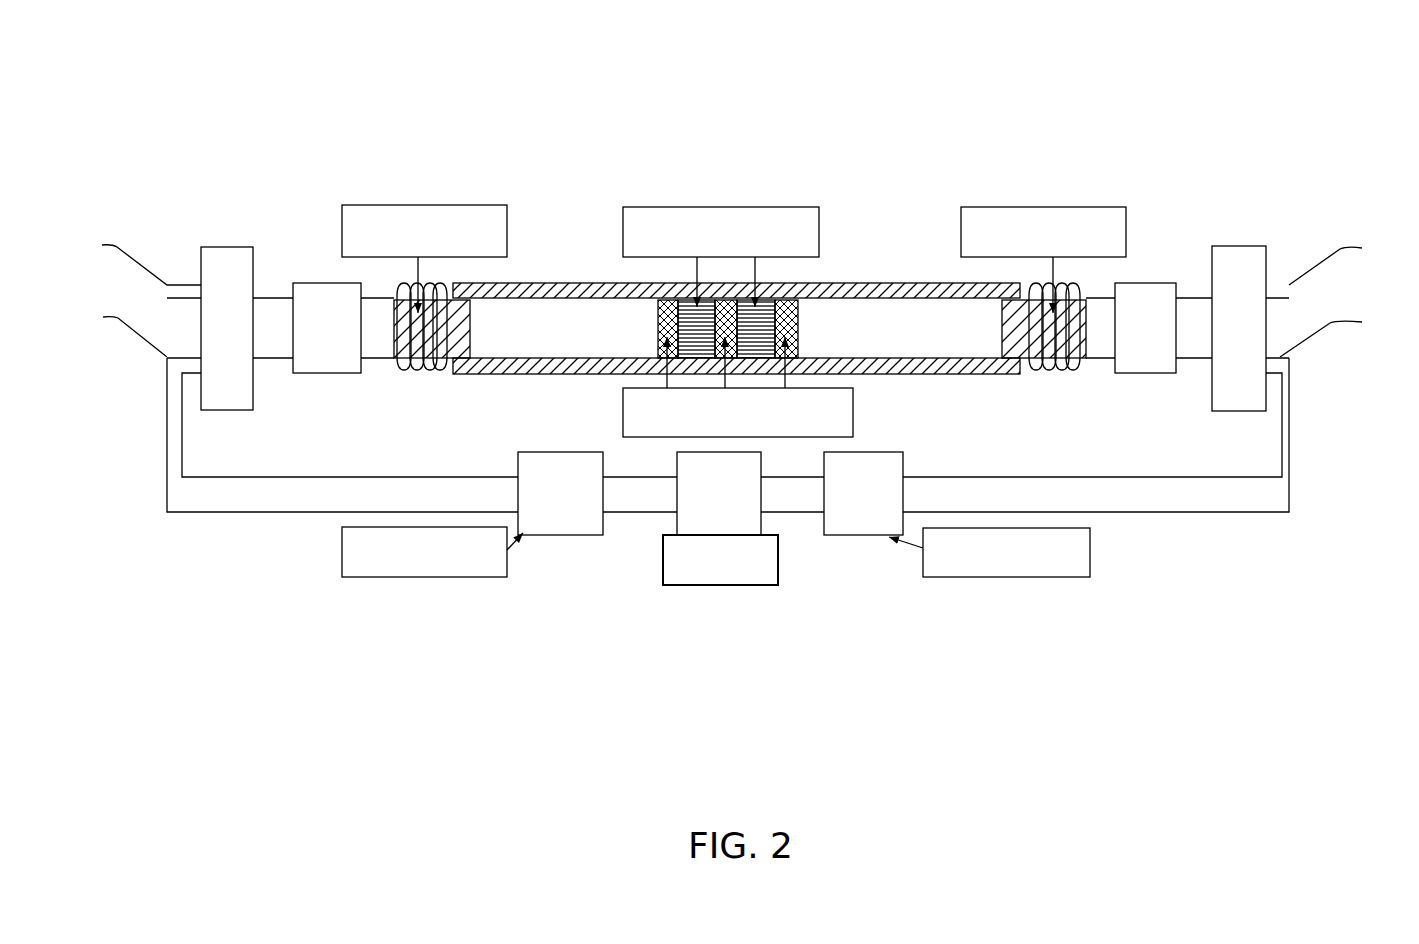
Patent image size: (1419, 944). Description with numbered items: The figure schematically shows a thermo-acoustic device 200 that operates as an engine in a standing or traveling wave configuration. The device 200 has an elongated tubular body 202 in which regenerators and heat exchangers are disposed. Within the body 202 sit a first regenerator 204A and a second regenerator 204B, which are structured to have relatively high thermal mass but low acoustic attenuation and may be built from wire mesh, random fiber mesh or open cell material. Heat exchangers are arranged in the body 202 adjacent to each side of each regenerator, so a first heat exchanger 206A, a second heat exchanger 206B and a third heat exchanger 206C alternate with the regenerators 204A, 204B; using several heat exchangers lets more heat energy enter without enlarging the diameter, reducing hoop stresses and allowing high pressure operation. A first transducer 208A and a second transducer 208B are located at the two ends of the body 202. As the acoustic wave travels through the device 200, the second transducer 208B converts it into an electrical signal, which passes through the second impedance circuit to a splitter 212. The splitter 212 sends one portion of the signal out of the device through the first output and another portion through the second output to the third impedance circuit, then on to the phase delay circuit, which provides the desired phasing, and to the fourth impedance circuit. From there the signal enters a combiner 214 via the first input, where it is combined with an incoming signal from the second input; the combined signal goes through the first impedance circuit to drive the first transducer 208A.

The device 200 is at (228, 88).
The elongated tubular body 202 is at (492, 362).
The first regenerator 204A is at (680, 205).
The second regenerator 204B is at (663, 254).
The first heat exchanger 206A is at (807, 388).
The second heat exchanger 206B is at (830, 269).
The third heat exchanger 206C is at (860, 282).
The first transducer 208A is at (425, 207).
The second transducer 208B is at (1057, 207).
The splitter 212 is at (1232, 250).
The combiner 214 is at (228, 250).